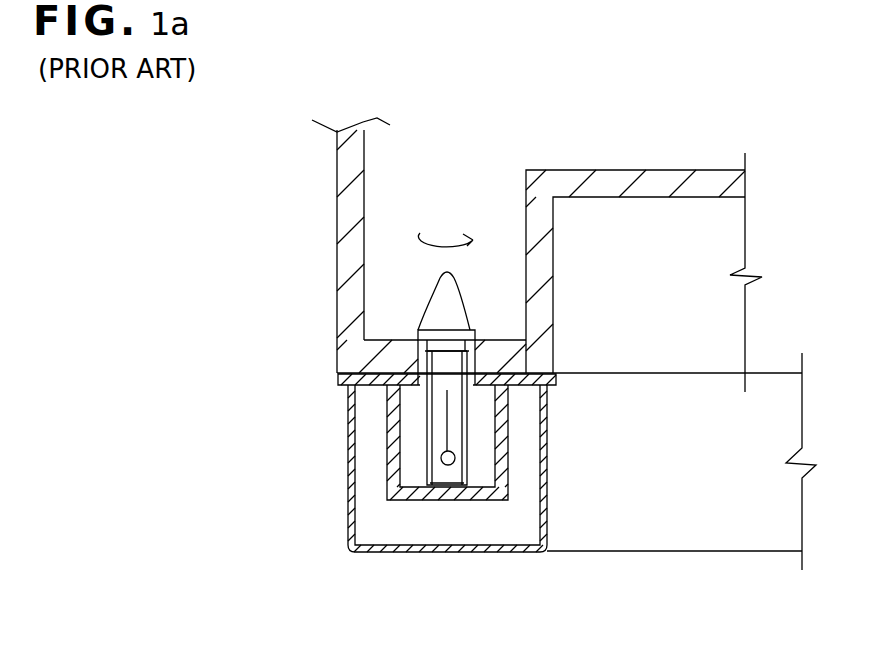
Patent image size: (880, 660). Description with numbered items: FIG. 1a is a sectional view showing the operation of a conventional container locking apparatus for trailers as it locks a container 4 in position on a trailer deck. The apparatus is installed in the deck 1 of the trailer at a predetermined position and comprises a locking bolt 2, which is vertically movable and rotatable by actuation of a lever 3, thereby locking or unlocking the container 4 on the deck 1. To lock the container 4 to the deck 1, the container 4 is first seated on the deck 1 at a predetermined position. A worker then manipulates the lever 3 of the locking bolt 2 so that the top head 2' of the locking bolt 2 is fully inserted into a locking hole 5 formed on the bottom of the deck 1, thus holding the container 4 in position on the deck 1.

The deck 1 is at (348, 423).
The locking bolt 2 is at (341, 424).
The top head 2' is at (376, 292).
The lever 3 is at (453, 464).
The container 4 is at (347, 157).
The locking hole 5 is at (422, 364).